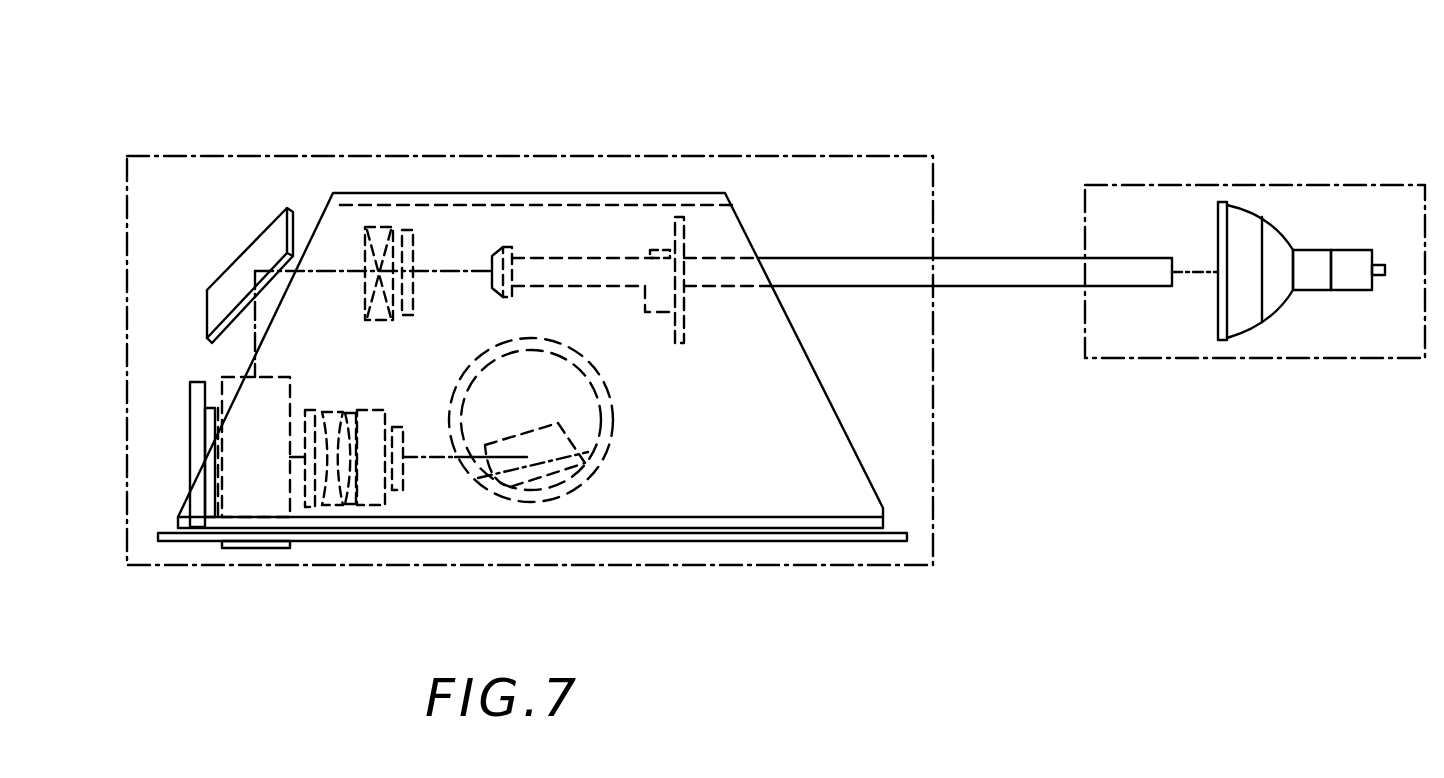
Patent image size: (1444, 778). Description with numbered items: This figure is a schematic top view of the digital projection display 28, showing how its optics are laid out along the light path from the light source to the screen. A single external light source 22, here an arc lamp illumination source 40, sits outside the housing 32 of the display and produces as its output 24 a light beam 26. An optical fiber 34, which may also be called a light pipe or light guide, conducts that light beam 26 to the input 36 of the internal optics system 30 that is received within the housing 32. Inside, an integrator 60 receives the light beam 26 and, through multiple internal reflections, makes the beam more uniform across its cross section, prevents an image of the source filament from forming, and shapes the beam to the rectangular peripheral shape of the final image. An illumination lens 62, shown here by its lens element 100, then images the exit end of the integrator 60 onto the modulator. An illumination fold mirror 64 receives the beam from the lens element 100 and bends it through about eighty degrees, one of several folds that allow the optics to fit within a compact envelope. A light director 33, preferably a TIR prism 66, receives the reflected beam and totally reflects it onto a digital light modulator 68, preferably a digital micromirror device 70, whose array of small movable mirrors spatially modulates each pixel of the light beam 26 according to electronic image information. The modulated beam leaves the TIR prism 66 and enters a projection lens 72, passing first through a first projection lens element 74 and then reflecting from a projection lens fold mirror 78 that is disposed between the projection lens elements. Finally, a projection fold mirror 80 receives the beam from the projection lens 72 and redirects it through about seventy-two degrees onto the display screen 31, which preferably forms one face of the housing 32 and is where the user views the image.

The external light source 22 is at (1290, 185).
The output 24 is at (1213, 272).
The light beam 26 is at (426, 273).
The digital projection display 28 is at (203, 101).
The internal optics system 30 is at (708, 248).
The display screen 31 is at (865, 541).
The housing 32 is at (125, 297).
The light director 33 is at (237, 556).
The optical fiber 34 is at (990, 258).
The input 36 is at (693, 277).
The arc lamp illumination source 40 is at (1277, 313).
The integrator 60 is at (657, 262).
The illumination lens 62 is at (328, 215).
The illumination fold mirror 64 is at (240, 262).
The TIR prism 66 is at (275, 549).
The digital light modulator 68 is at (190, 428).
The digital micromirror device 70 is at (190, 465).
The projection lens 72 is at (490, 518).
The first projection lens element 74 is at (395, 503).
The projection lens fold mirror 78 is at (515, 440).
The projection fold mirror 80 is at (803, 350).
The lens element 100 is at (386, 225).